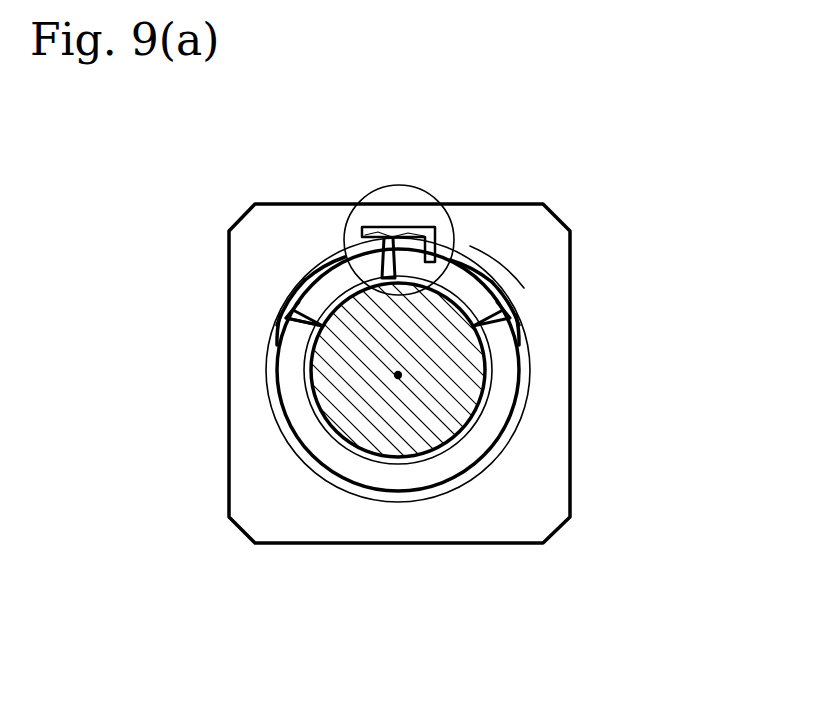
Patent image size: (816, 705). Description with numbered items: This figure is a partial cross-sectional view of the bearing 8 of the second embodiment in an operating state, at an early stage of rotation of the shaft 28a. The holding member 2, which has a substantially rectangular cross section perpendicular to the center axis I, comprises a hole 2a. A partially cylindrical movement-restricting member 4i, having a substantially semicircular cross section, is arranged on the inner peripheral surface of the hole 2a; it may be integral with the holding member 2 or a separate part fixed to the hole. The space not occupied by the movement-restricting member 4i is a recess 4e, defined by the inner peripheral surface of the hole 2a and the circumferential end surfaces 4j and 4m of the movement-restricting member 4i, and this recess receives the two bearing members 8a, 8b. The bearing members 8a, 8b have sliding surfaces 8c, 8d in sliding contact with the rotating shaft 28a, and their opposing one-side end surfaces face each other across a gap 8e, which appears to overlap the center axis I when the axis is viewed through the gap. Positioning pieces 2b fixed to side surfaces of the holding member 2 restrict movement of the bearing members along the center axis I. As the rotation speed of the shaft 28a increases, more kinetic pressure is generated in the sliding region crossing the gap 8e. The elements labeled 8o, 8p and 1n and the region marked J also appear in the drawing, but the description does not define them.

The bearing 8 is at (641, 188).
The bearing member 8a is at (306, 301).
The bearing member 8b is at (507, 290).
The sliding surface 8c is at (318, 297).
The sliding surface 8d is at (483, 300).
The gap 8e is at (384, 238).
The holder body inner surface portion 8o is at (303, 316).
The holder body inner surface portion 8p is at (508, 300).
The holding member 2 is at (652, 322).
The hole 2a is at (487, 265).
The positioning piece 2b is at (432, 227).
The detail region J is at (405, 185).
The recess 4e is at (293, 305).
The circumferential end surface 4j is at (308, 343).
The circumferential end surface 4m is at (523, 333).
The movement-restricting member 4i is at (453, 465).
The shaft sleeve 1n is at (487, 423).
The center axis I is at (396, 377).
The shaft 28a is at (390, 422).